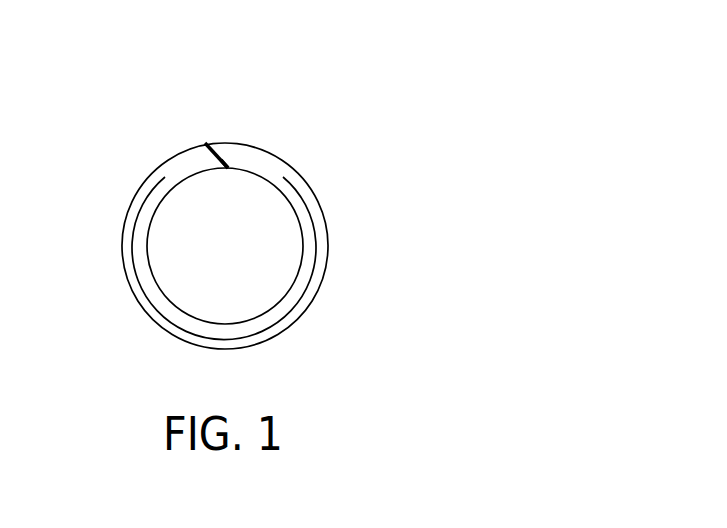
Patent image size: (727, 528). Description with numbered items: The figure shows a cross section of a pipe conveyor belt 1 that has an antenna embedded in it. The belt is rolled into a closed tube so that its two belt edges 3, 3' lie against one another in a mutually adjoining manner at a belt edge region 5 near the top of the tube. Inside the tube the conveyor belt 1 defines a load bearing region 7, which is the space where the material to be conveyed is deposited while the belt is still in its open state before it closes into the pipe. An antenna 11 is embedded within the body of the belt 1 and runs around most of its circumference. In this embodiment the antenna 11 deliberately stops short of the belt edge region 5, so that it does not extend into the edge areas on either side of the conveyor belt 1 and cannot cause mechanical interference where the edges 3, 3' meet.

The pipe conveyor belt 1 is at (338, 247).
The belt edge 3 is at (157, 155).
The belt edge 3' is at (287, 145).
The belt edge region 5 is at (227, 136).
The load bearing region 7 is at (228, 320).
The antenna 11 is at (283, 314).